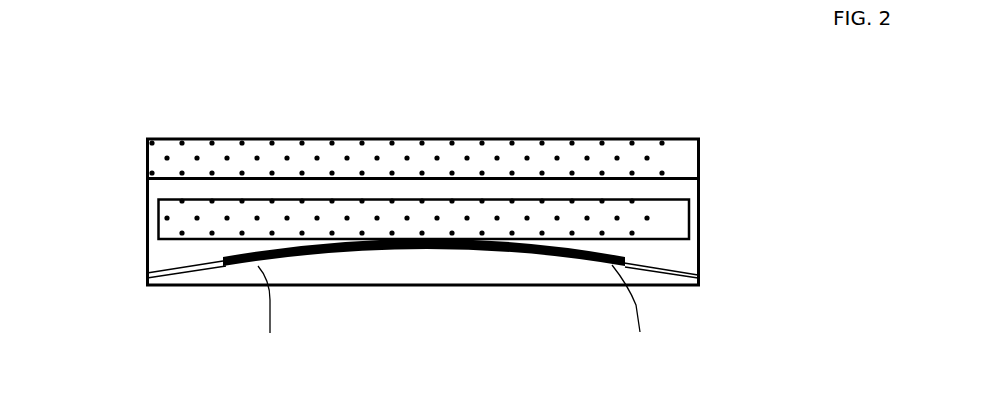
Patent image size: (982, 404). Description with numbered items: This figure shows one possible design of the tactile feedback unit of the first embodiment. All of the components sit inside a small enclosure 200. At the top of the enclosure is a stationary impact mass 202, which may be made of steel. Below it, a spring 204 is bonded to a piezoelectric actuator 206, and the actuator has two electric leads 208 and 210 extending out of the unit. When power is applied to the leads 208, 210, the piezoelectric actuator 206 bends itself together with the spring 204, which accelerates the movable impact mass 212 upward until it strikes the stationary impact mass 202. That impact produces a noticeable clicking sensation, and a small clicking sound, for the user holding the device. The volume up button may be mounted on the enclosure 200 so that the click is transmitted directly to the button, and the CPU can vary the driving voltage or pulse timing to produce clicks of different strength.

The enclosure 200 is at (182, 120).
The stationary impact mass 202 is at (157, 162).
The spring 204 is at (172, 269).
The piezoelectric actuator 206 is at (628, 255).
The electric lead 208 is at (267, 296).
The electric lead 210 is at (628, 310).
The impact mass 212 is at (677, 222).